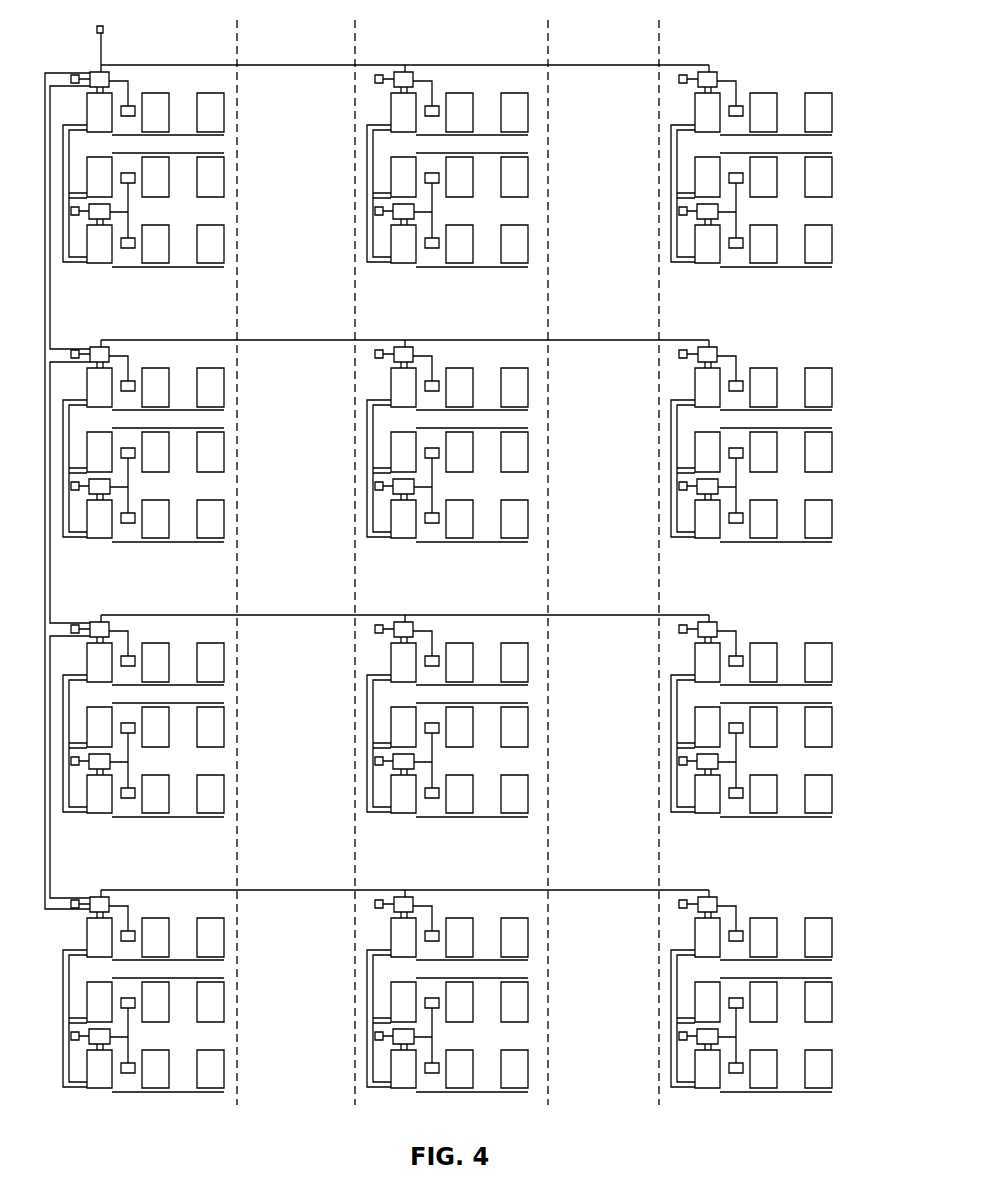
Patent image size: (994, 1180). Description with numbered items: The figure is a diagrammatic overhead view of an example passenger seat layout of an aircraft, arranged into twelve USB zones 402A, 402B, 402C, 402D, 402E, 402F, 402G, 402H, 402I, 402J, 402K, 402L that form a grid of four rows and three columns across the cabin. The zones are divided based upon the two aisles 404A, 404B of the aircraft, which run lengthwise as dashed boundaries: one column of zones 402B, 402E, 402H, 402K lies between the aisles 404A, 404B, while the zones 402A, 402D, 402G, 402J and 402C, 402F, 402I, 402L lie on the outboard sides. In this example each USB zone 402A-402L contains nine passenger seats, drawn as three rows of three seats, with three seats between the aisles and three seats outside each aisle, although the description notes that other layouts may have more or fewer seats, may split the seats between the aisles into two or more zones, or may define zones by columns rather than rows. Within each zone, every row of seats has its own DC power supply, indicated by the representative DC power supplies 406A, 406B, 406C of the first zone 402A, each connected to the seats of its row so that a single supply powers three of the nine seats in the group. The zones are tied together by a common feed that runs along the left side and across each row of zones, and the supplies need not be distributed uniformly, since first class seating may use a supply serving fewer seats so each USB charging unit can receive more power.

The USB zone 402A is at (192, 156).
The USB zone 402B is at (494, 294).
The USB zone 402C is at (798, 294).
The USB zone 402D is at (190, 569).
The USB zone 402E is at (494, 569).
The USB zone 402F is at (798, 569).
The USB zone 402G is at (192, 844).
The USB zone 402H is at (496, 844).
The USB zone 402I is at (789, 844).
The USB zone 402J is at (187, 1119).
The USB zone 402K is at (495, 1119).
The USB zone 402L is at (793, 1119).
The aisle 404A is at (296, 562).
The aisle 404B is at (603, 562).
The DC power supply 406A is at (131, 105).
The DC power supply 406B is at (135, 178).
The DC power supply 406C is at (135, 243).